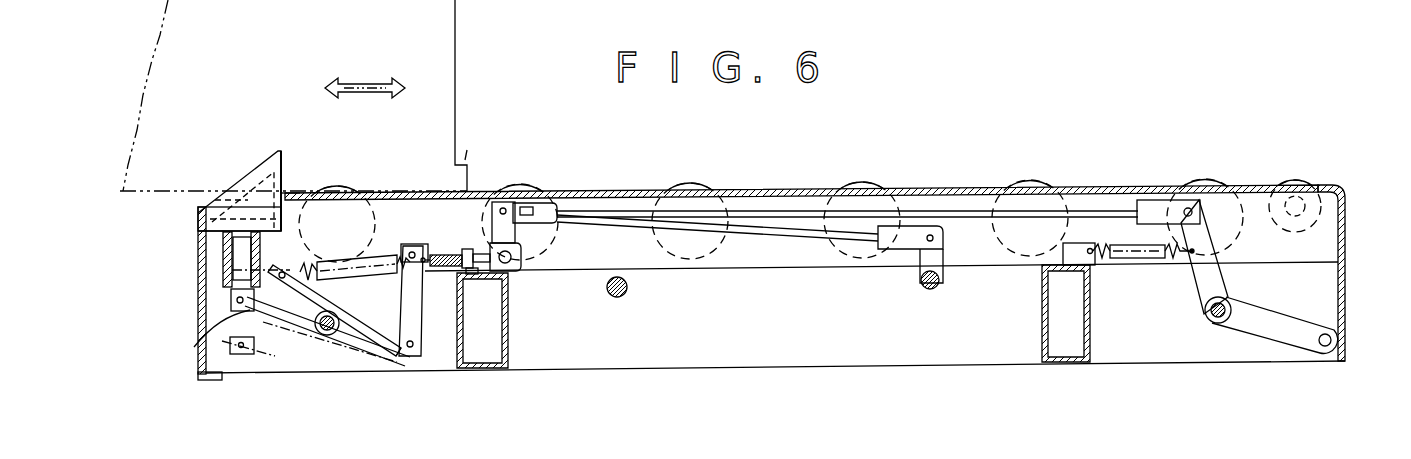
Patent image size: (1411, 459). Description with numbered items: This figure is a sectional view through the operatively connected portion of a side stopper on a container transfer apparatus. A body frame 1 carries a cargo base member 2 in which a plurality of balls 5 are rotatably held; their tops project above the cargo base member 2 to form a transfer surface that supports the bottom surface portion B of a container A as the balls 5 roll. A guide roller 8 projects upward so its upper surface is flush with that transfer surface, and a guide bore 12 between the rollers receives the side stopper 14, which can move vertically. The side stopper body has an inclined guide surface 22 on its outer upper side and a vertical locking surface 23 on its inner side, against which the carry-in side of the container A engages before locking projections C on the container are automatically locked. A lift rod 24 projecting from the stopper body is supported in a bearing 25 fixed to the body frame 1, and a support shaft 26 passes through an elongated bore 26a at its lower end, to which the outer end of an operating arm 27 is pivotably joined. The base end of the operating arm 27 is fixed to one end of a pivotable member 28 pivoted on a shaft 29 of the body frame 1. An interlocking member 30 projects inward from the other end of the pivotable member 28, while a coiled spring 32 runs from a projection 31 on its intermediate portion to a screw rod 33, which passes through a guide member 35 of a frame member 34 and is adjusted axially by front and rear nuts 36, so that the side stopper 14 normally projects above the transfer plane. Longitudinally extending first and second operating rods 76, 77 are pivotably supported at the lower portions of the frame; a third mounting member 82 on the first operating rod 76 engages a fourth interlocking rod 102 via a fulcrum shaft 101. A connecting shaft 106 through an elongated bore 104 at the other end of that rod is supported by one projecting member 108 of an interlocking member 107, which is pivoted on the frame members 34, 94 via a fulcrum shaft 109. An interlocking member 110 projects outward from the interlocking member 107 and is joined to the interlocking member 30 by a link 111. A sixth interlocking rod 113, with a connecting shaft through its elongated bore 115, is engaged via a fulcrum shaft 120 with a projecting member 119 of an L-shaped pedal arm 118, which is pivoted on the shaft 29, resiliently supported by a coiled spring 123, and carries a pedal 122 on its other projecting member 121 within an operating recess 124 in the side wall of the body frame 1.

The body frame 1 is at (198, 323).
The cargo base member 2 is at (621, 189).
The balls 5 is at (340, 193).
The guide roller 8 is at (200, 222).
The guide bore 12 is at (288, 193).
The side stopper 14 is at (258, 158).
The inclined guide surface 22 is at (248, 191).
The vertical locking surface 23 is at (284, 170).
The lift rod 24 is at (235, 250).
The bearing 25 is at (228, 270).
The support shaft 26 is at (236, 300).
The elongated bore 26a is at (199, 337).
The operating arm 27 is at (283, 348).
The pivotable member 28 is at (352, 352).
The shaft 29 is at (327, 336).
The interlocking member 30 is at (397, 357).
The projection 31 is at (300, 280).
The coiled spring 32 is at (356, 276).
The screw rod 33 is at (440, 254).
The frame member 34 is at (509, 343).
The guide member 35 is at (475, 272).
The nut 36 is at (468, 250).
The first operating rod 76 is at (930, 289).
The second operating rod 77 is at (616, 297).
The third mounting member 82 is at (918, 272).
The frame member 94 is at (1045, 340).
The fulcrum shaft 101 is at (930, 235).
The fourth interlocking rod 102 is at (800, 228).
The elongated bore 104 is at (525, 205).
The connecting shaft 106 is at (503, 206).
The interlocking member 107 is at (523, 258).
The projecting member 108 is at (516, 235).
The fulcrum shaft 109 is at (511, 262).
The interlocking member 110 is at (412, 250).
The link 111 is at (425, 335).
The sixth interlocking rod 113 is at (748, 215).
The elongated bore 115 is at (536, 210).
The pedal arm 118 is at (1197, 302).
The projecting member 119 is at (1200, 232).
The fulcrum shaft 120 is at (1188, 205).
The projecting member 121 is at (1263, 327).
The pedal 122 is at (1325, 348).
The coiled spring 123 is at (1135, 258).
The operating recess 124 is at (1350, 279).
The container A is at (455, 40).
The bottom surface portion B is at (405, 190).
The locking projection C is at (465, 160).